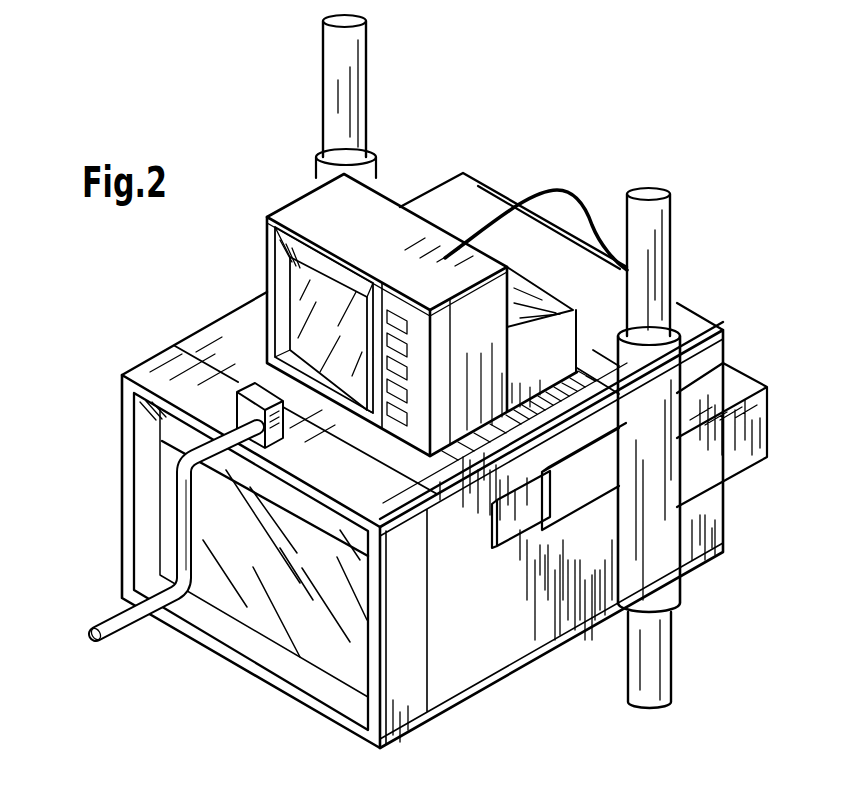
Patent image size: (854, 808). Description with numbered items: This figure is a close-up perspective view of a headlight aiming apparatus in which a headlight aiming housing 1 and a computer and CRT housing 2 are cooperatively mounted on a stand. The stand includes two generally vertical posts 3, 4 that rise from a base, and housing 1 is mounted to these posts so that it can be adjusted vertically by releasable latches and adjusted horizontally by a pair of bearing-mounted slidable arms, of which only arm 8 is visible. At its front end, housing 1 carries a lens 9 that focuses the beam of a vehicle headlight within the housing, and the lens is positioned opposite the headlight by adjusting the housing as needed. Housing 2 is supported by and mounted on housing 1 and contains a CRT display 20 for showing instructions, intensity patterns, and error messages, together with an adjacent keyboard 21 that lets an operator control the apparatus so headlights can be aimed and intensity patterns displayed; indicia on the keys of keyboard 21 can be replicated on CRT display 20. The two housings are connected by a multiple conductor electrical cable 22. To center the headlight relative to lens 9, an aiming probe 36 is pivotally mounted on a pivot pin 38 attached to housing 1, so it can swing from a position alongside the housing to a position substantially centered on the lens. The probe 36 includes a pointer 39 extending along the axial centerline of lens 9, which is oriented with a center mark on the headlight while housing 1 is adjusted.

The housing 1 is at (221, 315).
The housing 2 is at (301, 197).
The post 3 is at (367, 115).
The post 4 is at (667, 271).
The arm 8 is at (513, 523).
The lens 9 is at (260, 569).
The CRT display 20 is at (339, 330).
The keyboard 21 is at (175, 346).
The multiple conductor electrical cable 22 is at (557, 190).
The aiming probe 36 is at (181, 496).
The pivot pin 38 is at (277, 433).
The pointer 39 is at (128, 622).